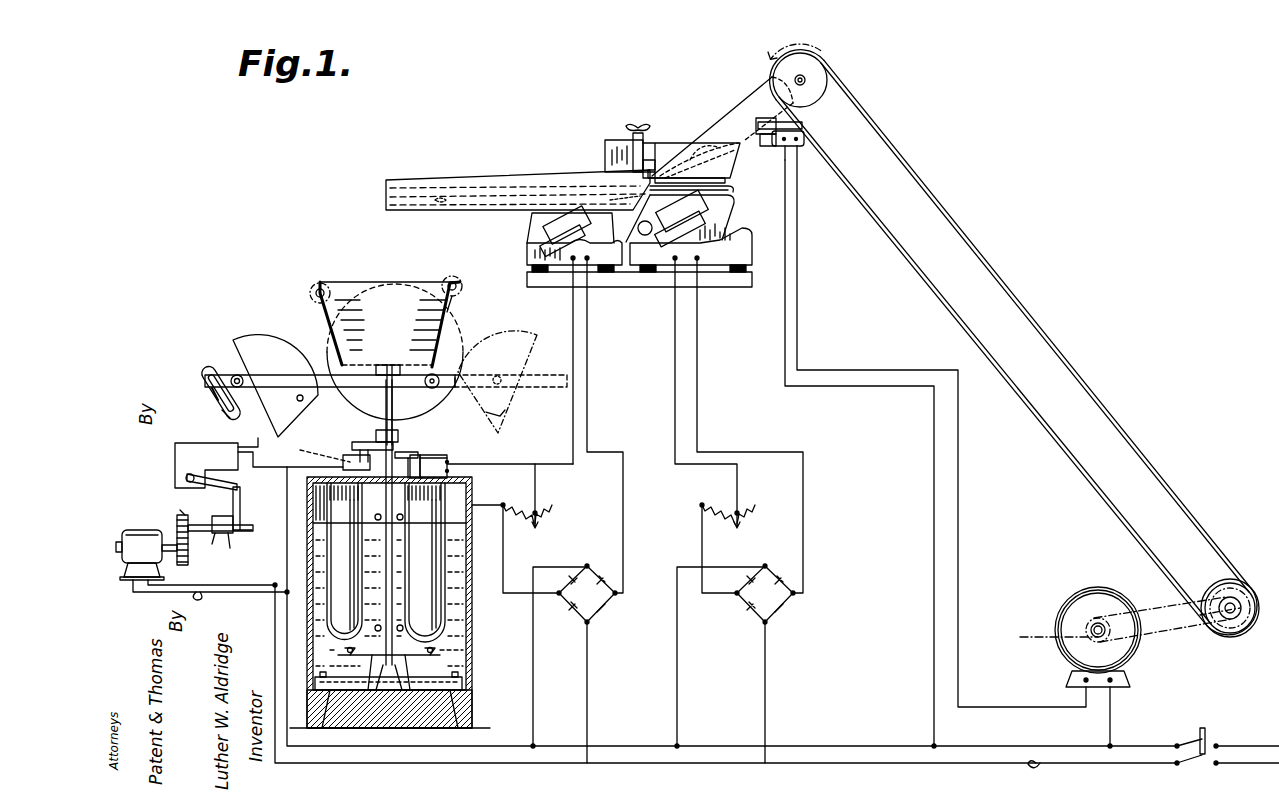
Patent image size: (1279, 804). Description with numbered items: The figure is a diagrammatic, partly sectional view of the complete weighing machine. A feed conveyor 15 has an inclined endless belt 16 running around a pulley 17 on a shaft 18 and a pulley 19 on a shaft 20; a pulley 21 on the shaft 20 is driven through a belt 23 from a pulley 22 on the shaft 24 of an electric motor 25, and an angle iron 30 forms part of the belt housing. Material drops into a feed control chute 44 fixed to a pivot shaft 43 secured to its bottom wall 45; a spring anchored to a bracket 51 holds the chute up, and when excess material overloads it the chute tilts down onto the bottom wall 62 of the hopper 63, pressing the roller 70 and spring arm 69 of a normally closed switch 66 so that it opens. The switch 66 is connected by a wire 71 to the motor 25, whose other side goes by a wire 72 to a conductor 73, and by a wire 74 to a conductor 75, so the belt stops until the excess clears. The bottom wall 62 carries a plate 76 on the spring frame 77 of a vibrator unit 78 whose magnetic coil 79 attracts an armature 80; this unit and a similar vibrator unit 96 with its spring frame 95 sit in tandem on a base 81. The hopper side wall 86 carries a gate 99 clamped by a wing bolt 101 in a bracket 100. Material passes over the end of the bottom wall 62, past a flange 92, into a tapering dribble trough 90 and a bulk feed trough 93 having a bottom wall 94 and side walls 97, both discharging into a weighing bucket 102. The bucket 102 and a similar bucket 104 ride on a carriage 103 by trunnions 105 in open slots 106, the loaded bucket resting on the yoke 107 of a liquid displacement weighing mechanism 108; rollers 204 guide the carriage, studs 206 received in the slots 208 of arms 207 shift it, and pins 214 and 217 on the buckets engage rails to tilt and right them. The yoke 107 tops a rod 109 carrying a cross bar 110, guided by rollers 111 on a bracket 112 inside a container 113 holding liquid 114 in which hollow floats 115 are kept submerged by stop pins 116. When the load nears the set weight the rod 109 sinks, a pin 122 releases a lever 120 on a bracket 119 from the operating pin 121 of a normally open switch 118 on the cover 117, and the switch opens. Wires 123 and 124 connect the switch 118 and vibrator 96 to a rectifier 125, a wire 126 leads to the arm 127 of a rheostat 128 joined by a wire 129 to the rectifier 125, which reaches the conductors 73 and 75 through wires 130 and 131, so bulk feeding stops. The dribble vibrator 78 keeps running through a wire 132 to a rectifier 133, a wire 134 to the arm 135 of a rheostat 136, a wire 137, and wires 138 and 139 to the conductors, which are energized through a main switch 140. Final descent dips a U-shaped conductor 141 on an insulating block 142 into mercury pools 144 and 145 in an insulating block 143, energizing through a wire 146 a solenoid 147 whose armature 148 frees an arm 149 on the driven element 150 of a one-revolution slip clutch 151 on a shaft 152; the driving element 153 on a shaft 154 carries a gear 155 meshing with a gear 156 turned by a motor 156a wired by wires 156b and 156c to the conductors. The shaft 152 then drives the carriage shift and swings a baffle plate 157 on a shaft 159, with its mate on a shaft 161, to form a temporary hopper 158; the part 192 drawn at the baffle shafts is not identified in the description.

The feed conveyor 15 is at (1005, 285).
The endless belt 16 is at (905, 183).
The pulley 17 is at (828, 98).
The shaft 18 is at (800, 80).
The pulley 19 is at (1215, 580).
The shaft 20 is at (1232, 616).
The pulley 21 is at (1210, 624).
The pulley 22 is at (1062, 631).
The belt 23 is at (1160, 605).
The shaft 24 is at (1098, 624).
The electric motor 25 is at (1075, 592).
The angle iron 30 is at (617, 199).
The shaft 43 is at (802, 126).
The feed control chute 44 is at (762, 80).
The bottom wall 45 is at (699, 160).
The bracket 51 is at (756, 126).
The bottom wall 62 is at (725, 181).
The hopper 63 is at (652, 140).
The Micro switch 66 is at (800, 146).
The spring arm 69 is at (785, 150).
The roller 70 is at (763, 146).
The wire 71 is at (958, 502).
The wire 72 is at (1110, 712).
The conductor 73 is at (287, 658).
The wire 74 is at (934, 642).
The conductor 75 is at (275, 640).
The plate 76 is at (733, 190).
The spring frame 77 is at (728, 210).
The vibrator unit 78 is at (752, 236).
The magnetic coil 79 is at (690, 200).
The armature 80 is at (648, 230).
The base 81 is at (640, 287).
The side wall 86 is at (700, 143).
The dribble trough 90 is at (480, 176).
The flange 92 is at (595, 190).
The bulk feed trough 93 is at (386, 196).
The bottom wall 94 is at (440, 204).
The spring frame 95 is at (540, 222).
The vibrator unit 96 is at (527, 254).
The side walls 97 is at (432, 182).
The gates 99 is at (612, 140).
The bracket 100 is at (655, 168).
The wing bolt 101 is at (638, 126).
The weighing bucket 102 is at (530, 345).
The carriage 103 is at (435, 388).
The bucket 104 is at (268, 338).
The trunnions 105 is at (275, 378).
The open slots 106 is at (497, 376).
The yoke 107 is at (345, 400).
The weighing mechanism 108 is at (472, 704).
The rod 109 is at (389, 668).
The cross bar 110 is at (440, 655).
The rollers 111 is at (362, 520).
The bracket 112 is at (462, 683).
The container 113 is at (472, 492).
The liquid 114 is at (466, 523).
The hollow floats 115 is at (330, 494).
The stop pins 116 is at (370, 690).
The cover 117 is at (253, 460).
The Micro switch 118 is at (470, 464).
The bracket 119 is at (410, 456).
The lever 120 is at (440, 456).
The operating pin 121 is at (437, 466).
The pin 122 is at (381, 464).
The wire 123 is at (573, 430).
The wire 124 is at (623, 500).
The rectifier 125 is at (607, 607).
The wire 126 is at (535, 488).
The arm 127 is at (545, 512).
The rheostat 128 is at (545, 520).
The wire 129 is at (503, 545).
The wire 130 is at (587, 686).
The wire 131 is at (533, 686).
The wire 132 is at (697, 390).
The rectifier 133 is at (790, 602).
The wire 134 is at (675, 390).
The arm 135 is at (737, 505).
The rheostat 136 is at (750, 518).
The wire 137 is at (702, 540).
The wire 138 is at (677, 686).
The wire 139 is at (765, 686).
The main switch 140 is at (1210, 728).
The U-shaped conductor 141 is at (356, 444).
The insulating block 142 is at (380, 432).
The insulating block 143 is at (343, 466).
The mercury pool 144 is at (321, 450).
The mercury pool 145 is at (408, 448).
The wire 146 is at (258, 440).
The solenoid 147 is at (190, 443).
The armature 148 is at (212, 482).
The arm 149 is at (240, 498).
The driven element 150 is at (240, 532).
The one-revolution slip-type friction clutch 151 is at (230, 548).
The shaft 152 is at (240, 518).
The driving clutch element 153 is at (208, 544).
The shaft 154 is at (210, 525).
The gear 155 is at (167, 511).
The gear 156 is at (188, 560).
The motor 156a is at (140, 530).
The wire 156b is at (218, 582).
The wire 156c is at (210, 585).
The baffle plate 157 is at (450, 310).
The temporary hopper 158 is at (428, 282).
The shaft 159 is at (462, 290).
The shaft 161 is at (310, 296).
The pin 192 is at (320, 289).
The rollers 204 is at (237, 375).
The studs 206 is at (205, 372).
The arm 207 is at (222, 412).
The slot 208 is at (212, 392).
The pin 214 is at (297, 399).
The pin 217 is at (490, 409).